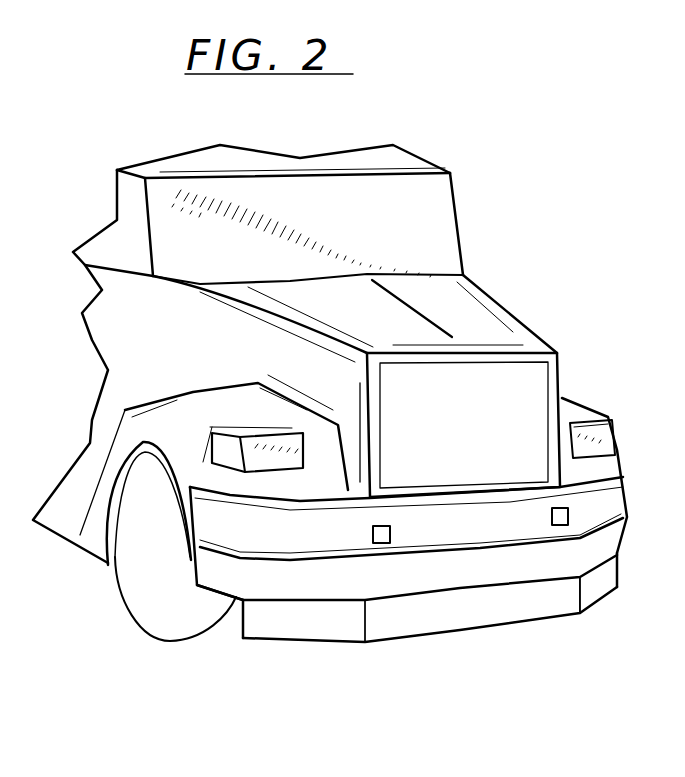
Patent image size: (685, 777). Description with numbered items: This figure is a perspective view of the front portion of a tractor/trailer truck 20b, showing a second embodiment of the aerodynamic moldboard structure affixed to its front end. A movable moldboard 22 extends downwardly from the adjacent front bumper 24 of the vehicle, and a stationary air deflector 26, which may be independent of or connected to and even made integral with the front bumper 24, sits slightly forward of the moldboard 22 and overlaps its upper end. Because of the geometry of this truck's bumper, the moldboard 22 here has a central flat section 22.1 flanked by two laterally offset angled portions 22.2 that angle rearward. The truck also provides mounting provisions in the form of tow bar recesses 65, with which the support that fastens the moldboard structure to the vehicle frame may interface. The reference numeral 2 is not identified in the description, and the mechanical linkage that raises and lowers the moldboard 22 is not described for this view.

The tractor/trailer truck 20b is at (500, 280).
The vehicle body 2 is at (265, 525).
The movable moldboard 22 is at (428, 644).
The central flat section 22.1 is at (465, 612).
The laterally offset angled portions 22.2 is at (345, 628).
The front bumper 24 is at (478, 517).
The stationary air deflector 26 is at (288, 575).
The tow bar recesses 65 is at (562, 520).